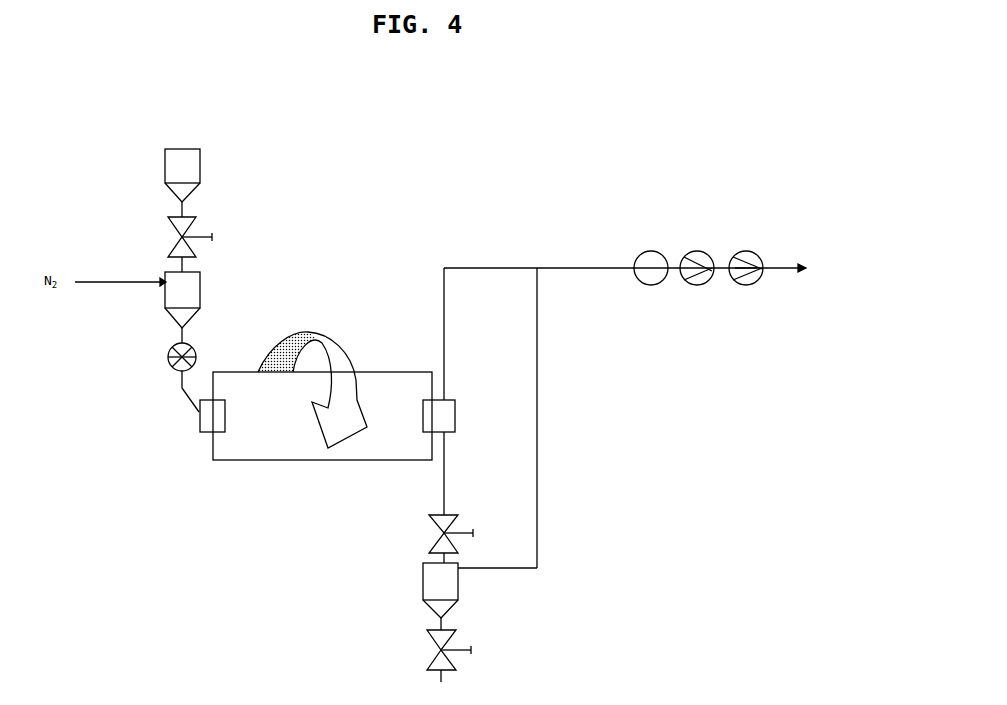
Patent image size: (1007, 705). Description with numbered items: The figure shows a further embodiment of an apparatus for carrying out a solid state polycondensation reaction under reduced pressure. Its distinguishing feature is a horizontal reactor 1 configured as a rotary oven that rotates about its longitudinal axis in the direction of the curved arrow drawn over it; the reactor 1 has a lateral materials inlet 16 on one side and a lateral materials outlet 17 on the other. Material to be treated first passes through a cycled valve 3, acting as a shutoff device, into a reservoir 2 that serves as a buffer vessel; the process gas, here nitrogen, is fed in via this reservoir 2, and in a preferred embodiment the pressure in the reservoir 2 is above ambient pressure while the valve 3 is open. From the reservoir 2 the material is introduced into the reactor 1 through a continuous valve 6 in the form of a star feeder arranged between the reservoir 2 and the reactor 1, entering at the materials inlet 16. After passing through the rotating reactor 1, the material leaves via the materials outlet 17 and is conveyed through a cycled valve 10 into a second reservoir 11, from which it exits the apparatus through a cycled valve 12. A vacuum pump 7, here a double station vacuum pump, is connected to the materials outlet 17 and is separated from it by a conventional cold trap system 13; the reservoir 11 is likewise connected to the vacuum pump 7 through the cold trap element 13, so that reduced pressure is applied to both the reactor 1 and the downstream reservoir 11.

The horizontal reactor 1 is at (290, 440).
The reservoir 2 is at (188, 283).
The cycled valve 3 is at (198, 222).
The continuous valve 6 is at (167, 360).
The vacuum pump 7 is at (722, 258).
The cycled valve 10 is at (440, 522).
The reservoir 11 is at (432, 585).
The cycled valve 12 is at (442, 665).
The cold trap system 13 is at (656, 253).
The lateral materials inlet 16 is at (212, 412).
The lateral materials outlet 17 is at (440, 412).